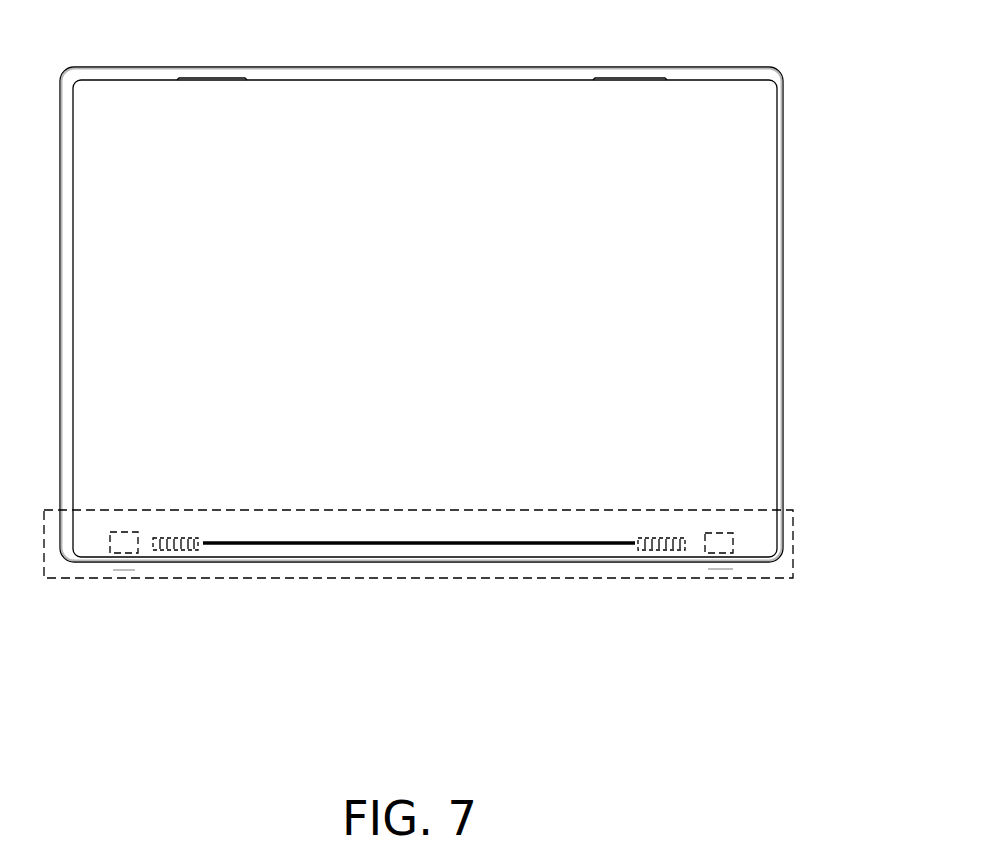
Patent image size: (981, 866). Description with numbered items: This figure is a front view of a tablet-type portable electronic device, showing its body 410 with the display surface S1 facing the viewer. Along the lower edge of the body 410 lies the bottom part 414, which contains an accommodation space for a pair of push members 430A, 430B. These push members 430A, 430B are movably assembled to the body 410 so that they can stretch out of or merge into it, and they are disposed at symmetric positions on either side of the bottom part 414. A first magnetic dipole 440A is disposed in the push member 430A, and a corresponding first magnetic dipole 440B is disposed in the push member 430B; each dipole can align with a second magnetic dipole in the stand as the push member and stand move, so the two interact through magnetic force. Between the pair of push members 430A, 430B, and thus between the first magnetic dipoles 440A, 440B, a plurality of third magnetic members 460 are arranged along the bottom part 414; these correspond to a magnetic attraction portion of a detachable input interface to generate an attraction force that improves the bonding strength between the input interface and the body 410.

The body 410 is at (721, 67).
The display surface S1 is at (749, 202).
The bottom part 414 is at (793, 545).
The push member 430A is at (118, 572).
The push member 430B is at (718, 568).
The first magnetic dipole 440A is at (127, 542).
The first magnetic dipole 440B is at (705, 543).
The third magnetic members 460 is at (635, 550).